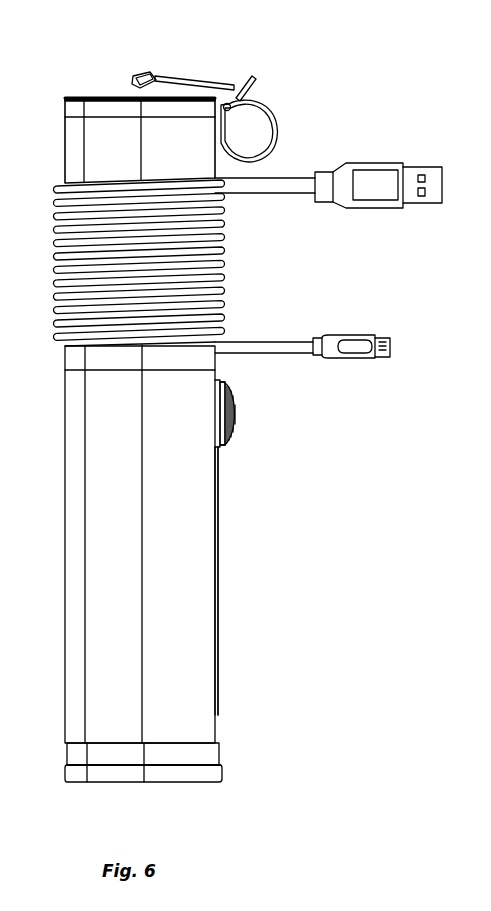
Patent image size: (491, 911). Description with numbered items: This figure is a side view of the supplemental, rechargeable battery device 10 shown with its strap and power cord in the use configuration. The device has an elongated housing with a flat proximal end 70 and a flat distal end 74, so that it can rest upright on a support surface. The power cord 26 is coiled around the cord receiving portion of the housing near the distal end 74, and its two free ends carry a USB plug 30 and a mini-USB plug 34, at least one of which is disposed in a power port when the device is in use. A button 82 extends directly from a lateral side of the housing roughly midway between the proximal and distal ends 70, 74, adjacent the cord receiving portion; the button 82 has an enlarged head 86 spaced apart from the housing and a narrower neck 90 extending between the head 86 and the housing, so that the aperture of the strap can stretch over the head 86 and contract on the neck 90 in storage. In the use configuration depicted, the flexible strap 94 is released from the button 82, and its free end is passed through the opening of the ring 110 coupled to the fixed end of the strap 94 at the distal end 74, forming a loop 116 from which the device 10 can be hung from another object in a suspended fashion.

The supplemental, rechargeable battery device 10 is at (50, 773).
The power cord 26 is at (224, 240).
The USB plug 30 is at (372, 163).
The mini-USB plug 34 is at (362, 358).
The proximal end 70 is at (220, 768).
The distal end 74 is at (74, 97).
The button 82 is at (237, 407).
The enlarged head 86 is at (223, 447).
The narrower neck 90 is at (219, 447).
The flexible strap 94 is at (272, 110).
The ring 110 is at (168, 73).
The loop 116 is at (280, 145).